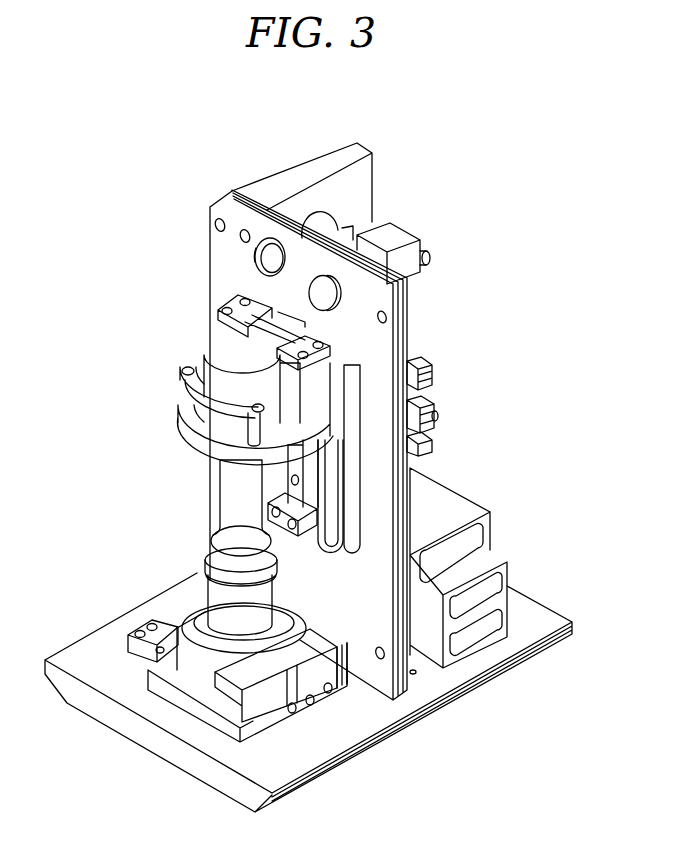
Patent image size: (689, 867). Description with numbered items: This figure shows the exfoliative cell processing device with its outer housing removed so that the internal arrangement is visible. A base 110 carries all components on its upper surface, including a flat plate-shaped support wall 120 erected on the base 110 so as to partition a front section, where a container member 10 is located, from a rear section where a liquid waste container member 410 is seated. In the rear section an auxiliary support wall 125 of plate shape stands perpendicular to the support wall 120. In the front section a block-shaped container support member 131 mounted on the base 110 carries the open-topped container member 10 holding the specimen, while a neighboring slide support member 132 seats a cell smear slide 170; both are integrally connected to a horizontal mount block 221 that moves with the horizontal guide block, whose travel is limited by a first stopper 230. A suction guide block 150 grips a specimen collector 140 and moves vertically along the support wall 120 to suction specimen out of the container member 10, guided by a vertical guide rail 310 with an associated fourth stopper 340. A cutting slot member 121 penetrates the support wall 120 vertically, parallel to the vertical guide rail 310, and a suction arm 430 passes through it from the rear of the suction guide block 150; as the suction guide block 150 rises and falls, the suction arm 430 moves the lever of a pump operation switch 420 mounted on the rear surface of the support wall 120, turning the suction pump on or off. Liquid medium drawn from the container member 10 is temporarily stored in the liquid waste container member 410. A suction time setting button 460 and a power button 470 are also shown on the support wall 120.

The container member 10 is at (233, 610).
The base 110 is at (107, 660).
The support wall 120 is at (356, 318).
The cutting slot member 121 is at (325, 492).
The auxiliary support wall 125 is at (298, 181).
The container support member 131 is at (195, 708).
The slide support member 132 is at (230, 705).
The specimen collector 140 is at (235, 492).
The suction guide block 150 is at (209, 340).
The cell smear slide 170 is at (347, 670).
The horizontal mount block 221 is at (197, 660).
The first stopper 230 is at (170, 642).
The vertical guide rail 310 is at (287, 502).
The fourth stopper 340 is at (303, 523).
The liquid waste container member 410 is at (487, 558).
The pump operation switch 420 is at (433, 422).
The suction arm 430 is at (430, 377).
The suction time setting button 460 is at (323, 293).
The power button 470 is at (268, 258).